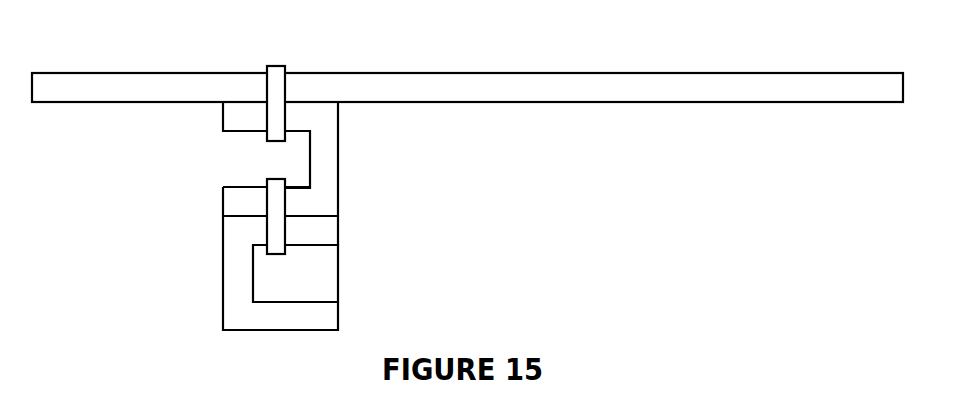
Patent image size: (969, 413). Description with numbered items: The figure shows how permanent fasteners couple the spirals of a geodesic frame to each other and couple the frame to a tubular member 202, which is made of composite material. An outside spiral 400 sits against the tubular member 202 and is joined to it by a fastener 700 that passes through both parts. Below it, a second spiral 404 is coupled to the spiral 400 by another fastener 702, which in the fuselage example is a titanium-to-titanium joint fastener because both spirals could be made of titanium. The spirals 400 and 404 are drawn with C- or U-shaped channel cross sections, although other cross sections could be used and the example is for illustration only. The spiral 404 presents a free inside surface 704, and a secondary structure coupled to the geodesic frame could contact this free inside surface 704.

The tubular member 202 is at (102, 73).
The spiral 400 is at (223, 118).
The spiral 404 is at (222, 272).
The fastener 700 is at (275, 65).
The fastener 702 is at (287, 253).
The free inside surface 704 is at (247, 330).